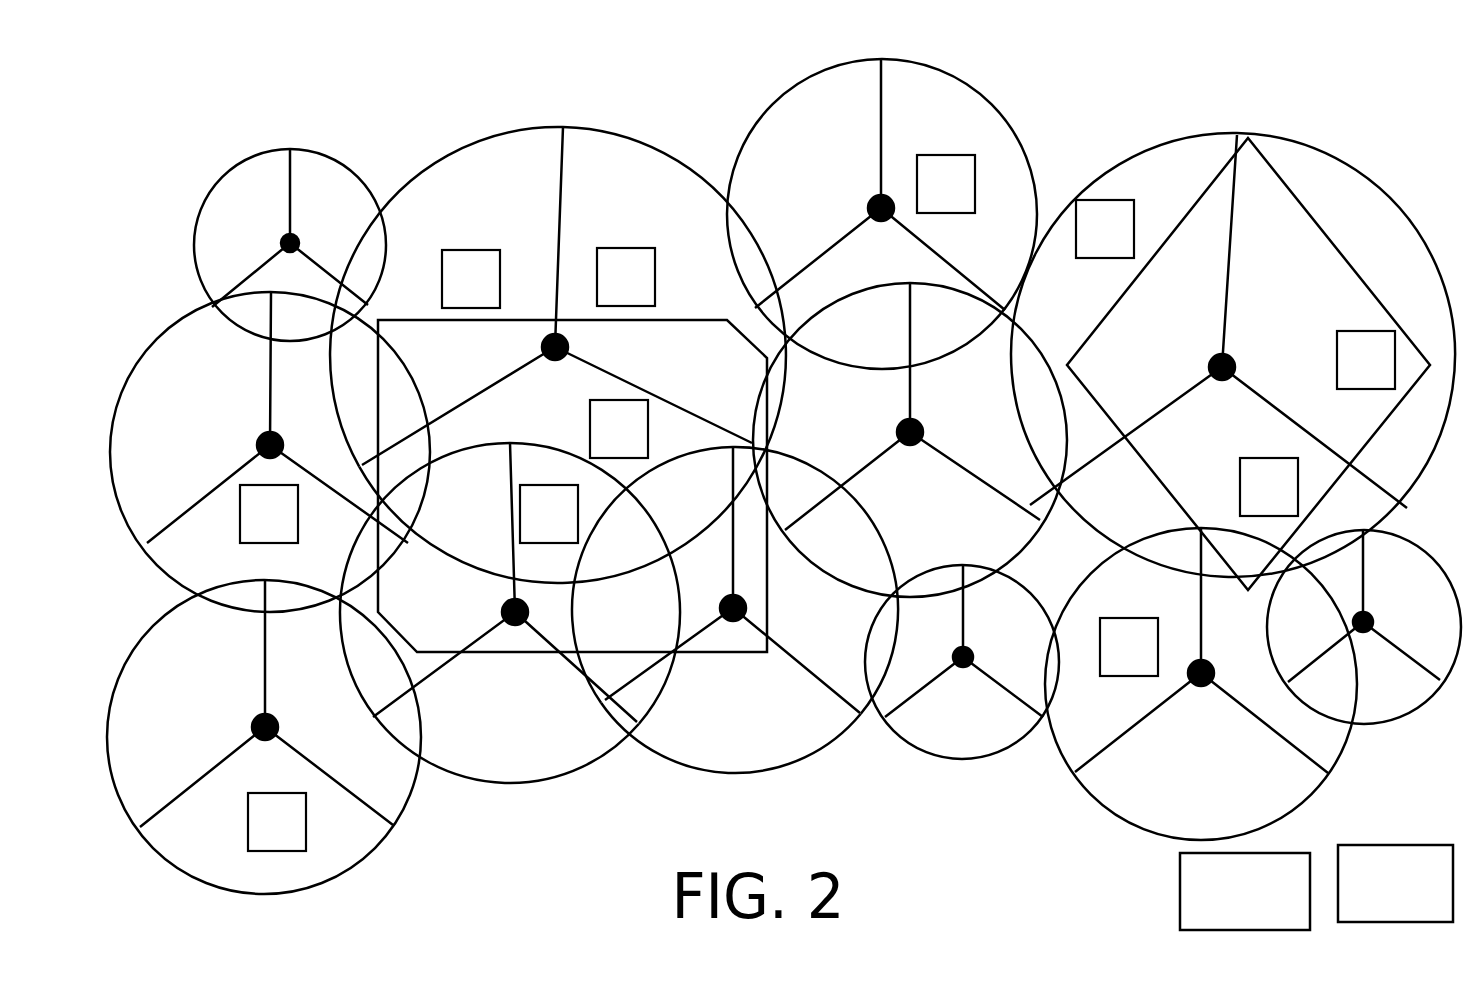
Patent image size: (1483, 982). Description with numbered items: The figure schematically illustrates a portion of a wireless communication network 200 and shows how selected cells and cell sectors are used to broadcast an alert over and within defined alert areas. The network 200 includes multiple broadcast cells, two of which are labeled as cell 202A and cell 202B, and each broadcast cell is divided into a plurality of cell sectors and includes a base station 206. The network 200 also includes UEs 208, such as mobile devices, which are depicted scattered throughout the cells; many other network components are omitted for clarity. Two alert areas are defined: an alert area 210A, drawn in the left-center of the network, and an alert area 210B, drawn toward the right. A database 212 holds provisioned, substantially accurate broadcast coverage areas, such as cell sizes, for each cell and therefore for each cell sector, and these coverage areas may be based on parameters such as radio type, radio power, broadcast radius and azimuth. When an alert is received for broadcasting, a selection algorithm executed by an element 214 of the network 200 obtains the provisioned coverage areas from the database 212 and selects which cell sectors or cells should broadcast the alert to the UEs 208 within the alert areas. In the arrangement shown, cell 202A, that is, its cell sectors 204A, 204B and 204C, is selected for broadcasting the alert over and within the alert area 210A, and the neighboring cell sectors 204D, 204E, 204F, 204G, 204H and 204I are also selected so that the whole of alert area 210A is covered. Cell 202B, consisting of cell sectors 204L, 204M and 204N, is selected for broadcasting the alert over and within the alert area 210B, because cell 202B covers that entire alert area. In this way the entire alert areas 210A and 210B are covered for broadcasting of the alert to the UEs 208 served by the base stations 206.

The wireless communication network 200 is at (181, 88).
The cell 202A is at (557, 366).
The cell 202B is at (1233, 337).
The cell sector 204A is at (470, 227).
The cell sector 204B is at (655, 227).
The cell sector 204C is at (580, 412).
The cell sector 204D is at (434, 606).
The cell sector 204E is at (597, 624).
The cell sector 204F is at (535, 689).
The cell sector 204G is at (676, 577).
The cell sector 204H is at (840, 626).
The cell sector 204I is at (753, 709).
The cell sector 204L is at (1152, 346).
The cell sector 204M is at (1308, 357).
The cell sector 204N is at (1247, 431).
The base station 206 is at (881, 208).
The UE 208 is at (457, 300).
The alert area 210A is at (680, 359).
The alert area 210B is at (1295, 239).
The database 212 is at (1227, 917).
The element 214 is at (1377, 909).